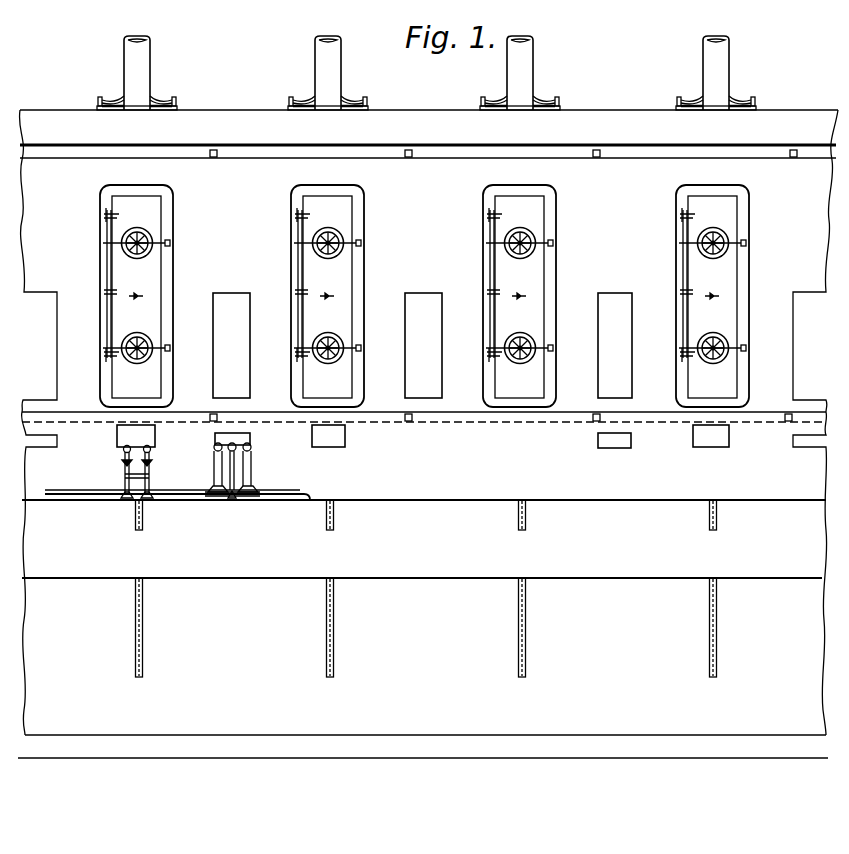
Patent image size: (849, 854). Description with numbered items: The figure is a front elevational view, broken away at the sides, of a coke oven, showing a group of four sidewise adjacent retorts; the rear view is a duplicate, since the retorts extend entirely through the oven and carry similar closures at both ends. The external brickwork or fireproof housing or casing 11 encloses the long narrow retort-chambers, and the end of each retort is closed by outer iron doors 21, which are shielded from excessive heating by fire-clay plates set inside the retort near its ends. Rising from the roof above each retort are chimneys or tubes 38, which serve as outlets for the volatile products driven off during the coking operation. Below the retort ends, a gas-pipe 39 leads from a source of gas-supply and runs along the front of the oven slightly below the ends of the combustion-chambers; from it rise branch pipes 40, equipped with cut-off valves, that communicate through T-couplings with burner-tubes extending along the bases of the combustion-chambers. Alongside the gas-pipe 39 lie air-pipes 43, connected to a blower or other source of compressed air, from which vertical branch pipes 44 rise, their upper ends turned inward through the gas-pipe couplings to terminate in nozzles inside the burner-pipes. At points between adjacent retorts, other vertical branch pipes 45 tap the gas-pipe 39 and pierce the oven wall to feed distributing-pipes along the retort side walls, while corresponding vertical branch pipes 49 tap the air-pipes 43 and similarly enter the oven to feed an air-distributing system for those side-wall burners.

The external housing or casing 11 is at (438, 199).
The outer iron doors 21 is at (513, 283).
The chimneys or tubes 38 is at (330, 89).
The gas-pipe 39 is at (170, 496).
The branch pipes 40 is at (124, 455).
The air-pipes 43 is at (307, 498).
The vertical branch pipes 44 is at (124, 478).
The vertical branch pipes 45 is at (248, 465).
The vertical branch pipes 49 is at (236, 473).